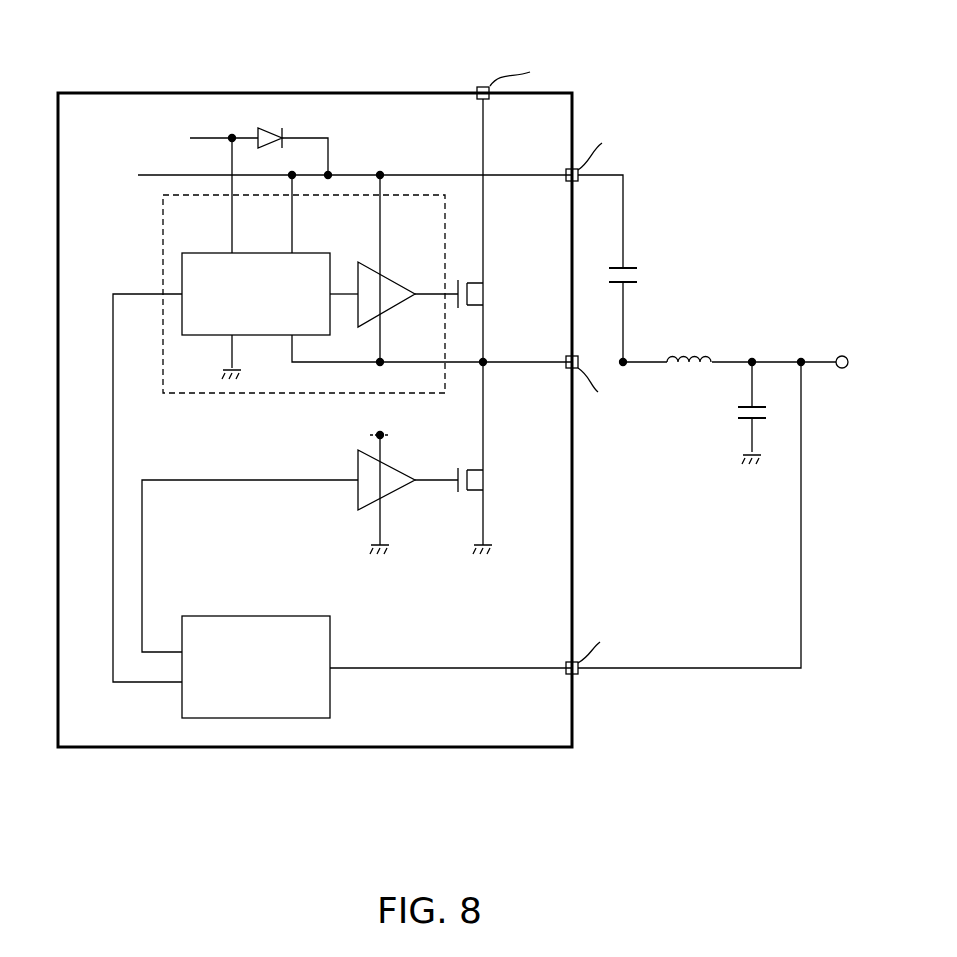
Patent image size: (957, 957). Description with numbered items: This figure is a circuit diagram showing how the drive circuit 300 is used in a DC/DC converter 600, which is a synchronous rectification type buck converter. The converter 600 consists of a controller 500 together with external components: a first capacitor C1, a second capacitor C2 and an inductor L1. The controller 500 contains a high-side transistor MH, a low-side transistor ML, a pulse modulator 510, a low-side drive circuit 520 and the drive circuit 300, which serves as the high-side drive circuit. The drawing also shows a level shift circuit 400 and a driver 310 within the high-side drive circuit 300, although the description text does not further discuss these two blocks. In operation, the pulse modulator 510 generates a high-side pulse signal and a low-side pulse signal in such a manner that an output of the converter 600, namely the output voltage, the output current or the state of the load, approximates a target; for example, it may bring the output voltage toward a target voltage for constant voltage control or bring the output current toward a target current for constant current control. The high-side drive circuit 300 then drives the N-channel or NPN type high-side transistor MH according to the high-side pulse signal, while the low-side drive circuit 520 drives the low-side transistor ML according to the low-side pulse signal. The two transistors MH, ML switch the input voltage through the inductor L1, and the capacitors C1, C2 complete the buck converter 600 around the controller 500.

The DC/DC converter 600 is at (788, 90).
The controller 500 is at (236, 92).
The drive circuit 300 is at (163, 228).
The level shift circuit 400 is at (310, 253).
The high-side driver 310 is at (388, 280).
The low-side drive circuit 520 is at (352, 505).
The pulse modulator 510 is at (275, 616).
The high-side transistor MH is at (493, 291).
The low-side transistor ML is at (493, 470).
The capacitor C1 is at (640, 273).
The capacitor C2 is at (735, 407).
The inductor L1 is at (683, 335).